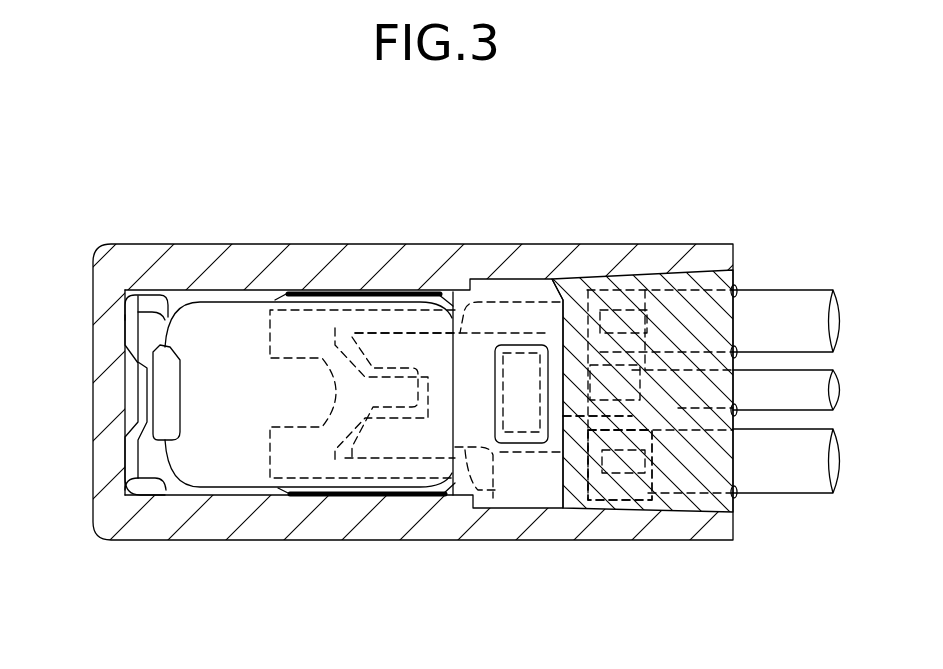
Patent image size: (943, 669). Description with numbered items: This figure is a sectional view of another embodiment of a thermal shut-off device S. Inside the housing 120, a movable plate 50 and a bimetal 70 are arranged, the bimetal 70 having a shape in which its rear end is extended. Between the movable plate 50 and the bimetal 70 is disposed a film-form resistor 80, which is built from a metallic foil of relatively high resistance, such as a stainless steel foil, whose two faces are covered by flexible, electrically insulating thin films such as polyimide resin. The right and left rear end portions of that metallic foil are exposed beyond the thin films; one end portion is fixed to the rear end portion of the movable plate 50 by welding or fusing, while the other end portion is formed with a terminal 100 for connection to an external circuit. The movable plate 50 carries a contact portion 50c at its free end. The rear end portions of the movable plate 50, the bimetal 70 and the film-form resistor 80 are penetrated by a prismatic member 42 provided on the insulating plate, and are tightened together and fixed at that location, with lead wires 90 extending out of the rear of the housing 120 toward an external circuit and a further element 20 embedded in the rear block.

The terminal 20 is at (626, 478).
The prismatic member 42 is at (523, 370).
The movable plate 50 is at (142, 445).
The contact point 50c is at (165, 345).
The bimetal 70 is at (250, 473).
The film-form resistor 80 is at (370, 468).
The lead wire 90 is at (615, 282).
The terminal 100 is at (653, 278).
The housing 120 is at (423, 262).
The sensor S is at (276, 212).